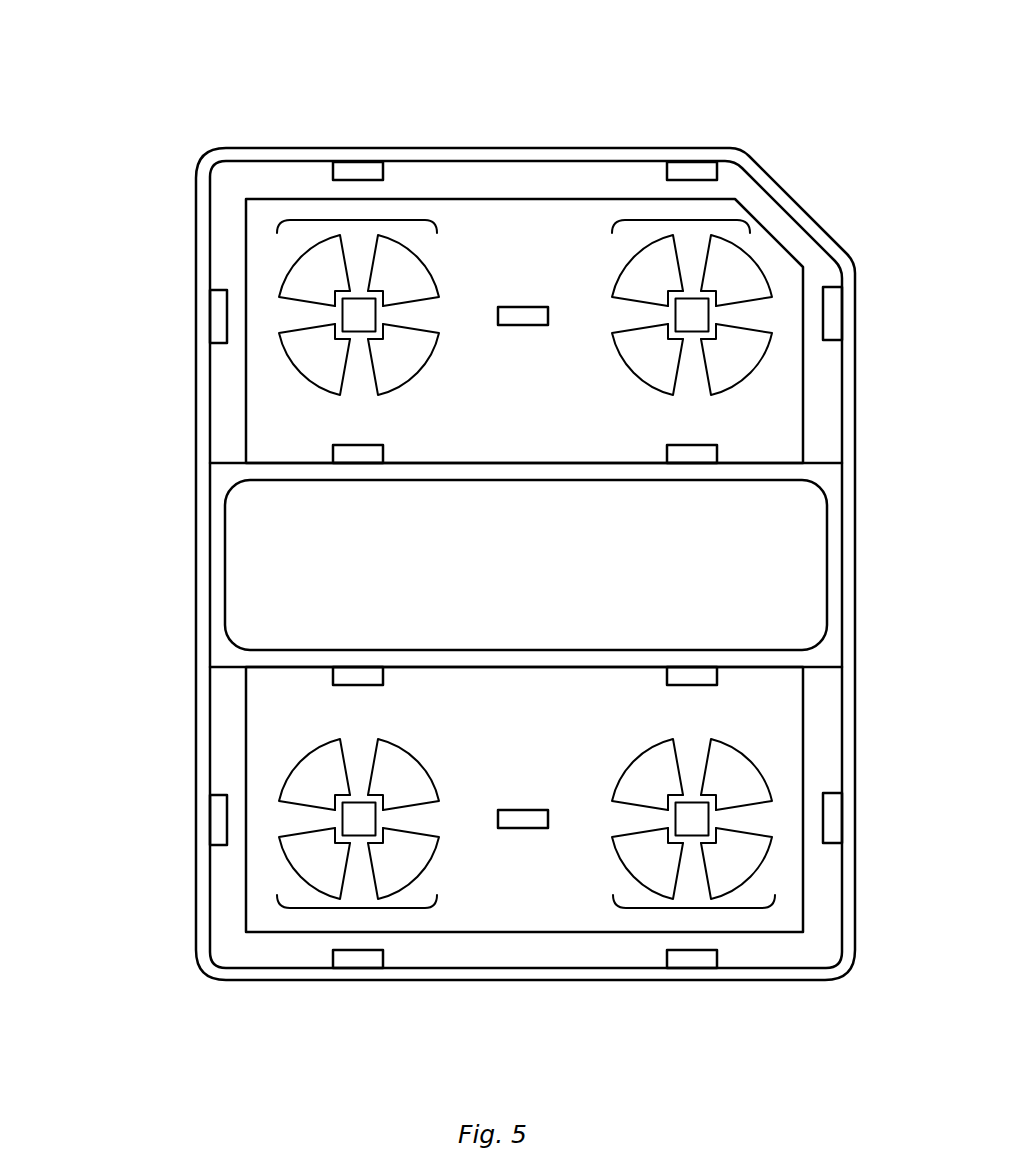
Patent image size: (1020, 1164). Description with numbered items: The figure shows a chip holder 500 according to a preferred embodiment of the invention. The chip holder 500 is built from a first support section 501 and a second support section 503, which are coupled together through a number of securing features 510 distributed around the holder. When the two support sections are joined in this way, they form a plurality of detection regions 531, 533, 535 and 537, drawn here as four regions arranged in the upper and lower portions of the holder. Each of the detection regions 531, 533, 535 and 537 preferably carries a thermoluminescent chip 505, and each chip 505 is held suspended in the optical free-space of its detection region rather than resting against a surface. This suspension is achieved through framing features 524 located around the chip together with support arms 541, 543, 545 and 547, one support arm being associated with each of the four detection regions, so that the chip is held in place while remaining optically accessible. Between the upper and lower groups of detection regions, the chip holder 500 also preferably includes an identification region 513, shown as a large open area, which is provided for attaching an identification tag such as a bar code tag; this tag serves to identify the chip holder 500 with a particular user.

The chip holder 500 is at (168, 65).
The first support section 501 is at (863, 173).
The second support section 503 is at (526, 564).
The thermoluminescent chip 505 is at (360, 318).
The securing features 510 is at (218, 313).
The identification region 513 is at (748, 557).
The framing features 524 is at (380, 295).
The detection region 531 is at (356, 220).
The detection region 533 is at (370, 958).
The detection region 535 is at (705, 958).
The detection region 537 is at (680, 220).
The support arm 541 is at (287, 315).
The support arm 543 is at (303, 820).
The support arm 545 is at (738, 817).
The support arm 547 is at (762, 313).